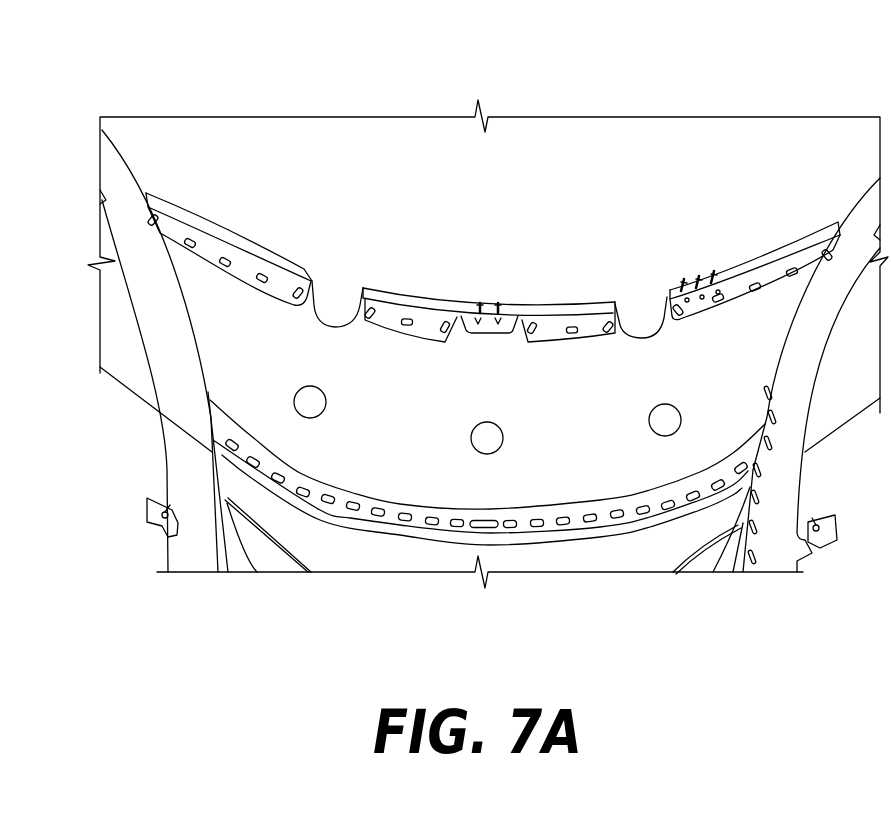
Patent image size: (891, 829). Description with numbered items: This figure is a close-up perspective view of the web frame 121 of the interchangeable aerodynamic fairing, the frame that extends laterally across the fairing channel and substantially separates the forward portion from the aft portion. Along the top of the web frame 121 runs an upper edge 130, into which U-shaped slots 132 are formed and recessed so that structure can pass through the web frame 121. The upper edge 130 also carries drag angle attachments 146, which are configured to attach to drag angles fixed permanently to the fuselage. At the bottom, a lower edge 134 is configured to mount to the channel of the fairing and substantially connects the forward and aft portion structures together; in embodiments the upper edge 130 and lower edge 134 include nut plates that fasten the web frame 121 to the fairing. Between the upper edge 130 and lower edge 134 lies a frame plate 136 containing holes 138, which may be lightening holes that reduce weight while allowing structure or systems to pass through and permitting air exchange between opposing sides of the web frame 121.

The web frame 121 is at (304, 180).
The upper edge 130 is at (548, 325).
The slots 132 is at (337, 283).
The lower edge 134 is at (448, 537).
The frame plate 136 is at (410, 438).
The holes 138 is at (308, 410).
The drag angle attachments 146 is at (480, 307).